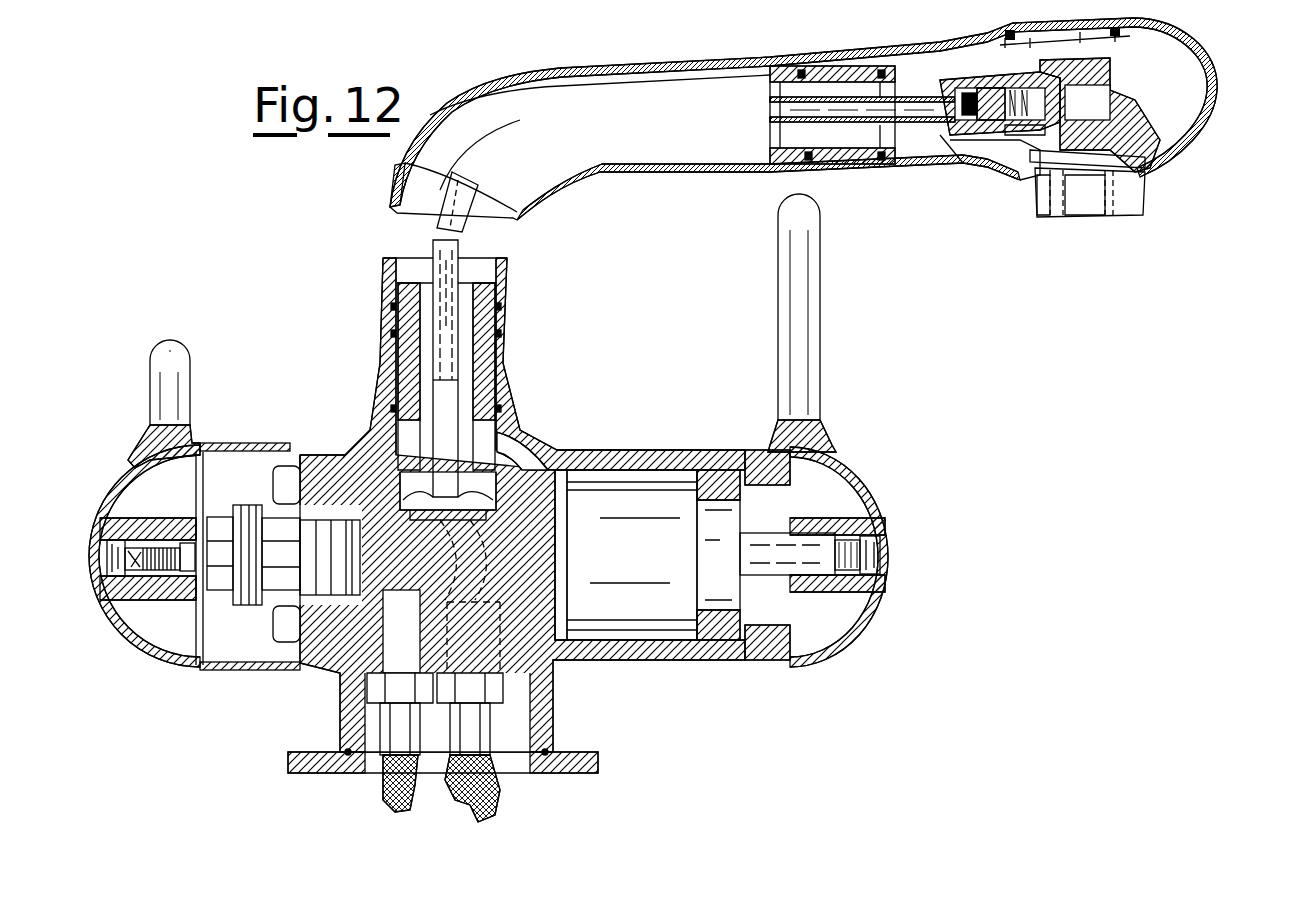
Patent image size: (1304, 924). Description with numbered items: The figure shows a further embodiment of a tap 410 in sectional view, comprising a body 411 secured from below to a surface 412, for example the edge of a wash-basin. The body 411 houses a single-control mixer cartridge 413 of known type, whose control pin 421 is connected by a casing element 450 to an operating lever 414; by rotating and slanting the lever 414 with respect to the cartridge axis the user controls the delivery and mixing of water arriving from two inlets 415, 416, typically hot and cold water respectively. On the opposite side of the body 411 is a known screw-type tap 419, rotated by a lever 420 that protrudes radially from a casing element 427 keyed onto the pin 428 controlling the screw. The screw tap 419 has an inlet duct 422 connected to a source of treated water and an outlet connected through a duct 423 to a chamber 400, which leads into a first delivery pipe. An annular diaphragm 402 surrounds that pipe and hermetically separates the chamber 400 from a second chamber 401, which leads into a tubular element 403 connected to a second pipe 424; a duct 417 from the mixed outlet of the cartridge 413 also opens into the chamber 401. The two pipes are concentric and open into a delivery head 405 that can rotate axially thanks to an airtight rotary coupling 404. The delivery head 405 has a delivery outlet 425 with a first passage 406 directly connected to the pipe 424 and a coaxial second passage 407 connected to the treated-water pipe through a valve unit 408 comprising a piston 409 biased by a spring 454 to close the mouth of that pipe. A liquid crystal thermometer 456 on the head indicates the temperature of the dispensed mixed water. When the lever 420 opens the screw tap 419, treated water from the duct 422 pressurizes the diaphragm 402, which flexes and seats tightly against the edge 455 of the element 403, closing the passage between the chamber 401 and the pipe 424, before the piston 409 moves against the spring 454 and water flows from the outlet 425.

The chamber 400 is at (412, 508).
The second chamber 401 is at (497, 437).
The annular diaphragm 402 is at (490, 482).
The tubular element 403 is at (423, 367).
The airtight rotary coupling 404 is at (880, 17).
The delivery head 405 is at (1213, 50).
The first passage 406 is at (1053, 217).
The second passage 407 is at (1093, 210).
The valve unit 408 is at (977, 70).
The piston 409 is at (987, 127).
The tap 410 is at (268, 214).
The body 411 is at (613, 450).
The surface 412 is at (598, 763).
The single-control mixer cartridge 413 is at (627, 613).
The operating lever 414 is at (810, 305).
The inlet 415 is at (443, 803).
The inlet 416 is at (503, 797).
The duct 417 is at (520, 460).
The screw-type tap 419 is at (240, 620).
The lever 420 is at (180, 360).
The control pin 421 is at (803, 587).
The inlet duct 422 is at (387, 783).
The duct 423 is at (347, 500).
The second pipe 424 is at (503, 270).
The delivery outlet 425 is at (1143, 197).
The casing element 427 is at (103, 520).
The pin 428 is at (193, 540).
The casing element 450 is at (880, 505).
The spring 454 is at (1017, 123).
The edge 455 is at (362, 500).
The liquid crystal thermometer 456 is at (1090, 25).